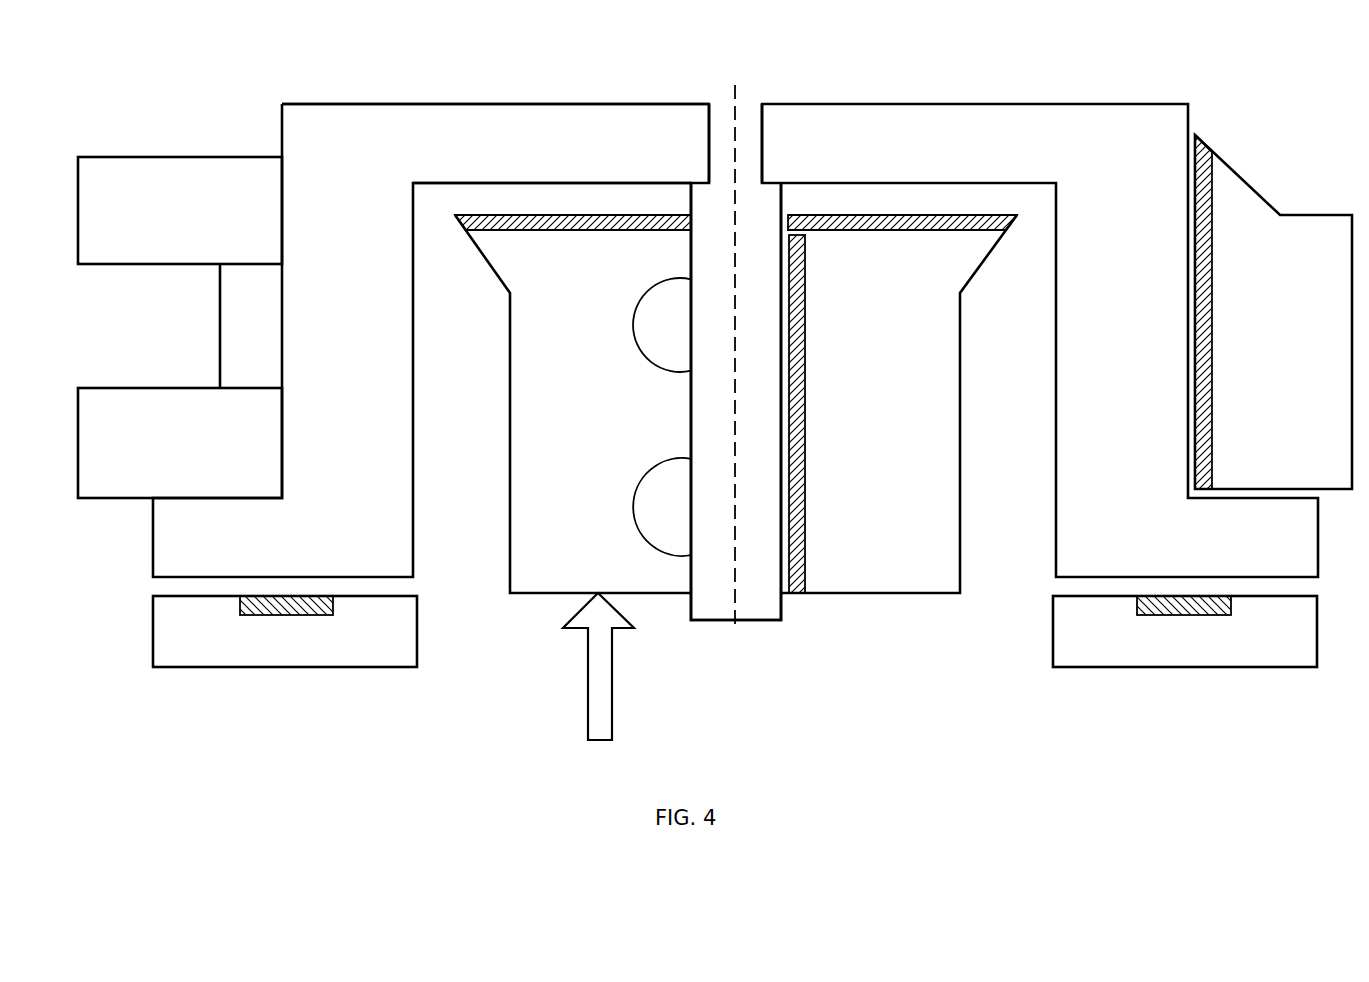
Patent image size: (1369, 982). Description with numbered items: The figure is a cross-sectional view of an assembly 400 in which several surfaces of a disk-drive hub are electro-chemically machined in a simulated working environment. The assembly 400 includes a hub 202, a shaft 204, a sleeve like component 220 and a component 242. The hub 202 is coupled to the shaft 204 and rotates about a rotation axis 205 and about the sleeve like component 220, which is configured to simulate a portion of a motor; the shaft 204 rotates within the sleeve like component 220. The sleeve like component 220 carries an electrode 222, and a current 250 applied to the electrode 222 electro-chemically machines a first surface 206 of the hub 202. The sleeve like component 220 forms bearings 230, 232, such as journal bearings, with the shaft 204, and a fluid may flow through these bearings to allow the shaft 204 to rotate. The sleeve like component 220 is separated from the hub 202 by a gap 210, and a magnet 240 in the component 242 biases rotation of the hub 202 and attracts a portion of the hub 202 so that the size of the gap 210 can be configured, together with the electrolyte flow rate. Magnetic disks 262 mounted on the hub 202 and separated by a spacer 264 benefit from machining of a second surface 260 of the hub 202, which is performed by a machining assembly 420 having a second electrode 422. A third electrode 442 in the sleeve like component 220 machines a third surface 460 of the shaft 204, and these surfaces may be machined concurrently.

The assembly 400 is at (179, 74).
The hub 202 is at (516, 104).
The shaft 204 is at (720, 104).
The rotation axis 205 is at (736, 92).
The first surface 206 is at (486, 184).
The gap 210 is at (459, 198).
The sleeve like component 220 is at (606, 410).
The electrode 222 is at (659, 214).
The bearing 230 is at (688, 338).
The bearing 232 is at (688, 520).
The magnet 240 is at (287, 616).
The component 242 is at (287, 667).
The current 250 is at (598, 740).
The second surface 260 is at (281, 127).
The magnetic disks 262 is at (191, 225).
The spacer 264 is at (219, 365).
The machining assembly 420 is at (1306, 353).
The second electrode 422 is at (1200, 142).
The third electrode 442 is at (807, 579).
The third surface 460 is at (782, 607).